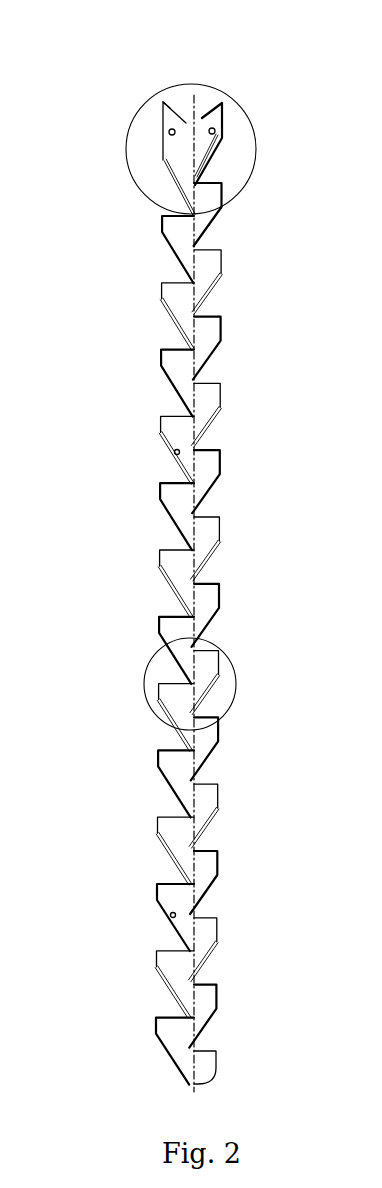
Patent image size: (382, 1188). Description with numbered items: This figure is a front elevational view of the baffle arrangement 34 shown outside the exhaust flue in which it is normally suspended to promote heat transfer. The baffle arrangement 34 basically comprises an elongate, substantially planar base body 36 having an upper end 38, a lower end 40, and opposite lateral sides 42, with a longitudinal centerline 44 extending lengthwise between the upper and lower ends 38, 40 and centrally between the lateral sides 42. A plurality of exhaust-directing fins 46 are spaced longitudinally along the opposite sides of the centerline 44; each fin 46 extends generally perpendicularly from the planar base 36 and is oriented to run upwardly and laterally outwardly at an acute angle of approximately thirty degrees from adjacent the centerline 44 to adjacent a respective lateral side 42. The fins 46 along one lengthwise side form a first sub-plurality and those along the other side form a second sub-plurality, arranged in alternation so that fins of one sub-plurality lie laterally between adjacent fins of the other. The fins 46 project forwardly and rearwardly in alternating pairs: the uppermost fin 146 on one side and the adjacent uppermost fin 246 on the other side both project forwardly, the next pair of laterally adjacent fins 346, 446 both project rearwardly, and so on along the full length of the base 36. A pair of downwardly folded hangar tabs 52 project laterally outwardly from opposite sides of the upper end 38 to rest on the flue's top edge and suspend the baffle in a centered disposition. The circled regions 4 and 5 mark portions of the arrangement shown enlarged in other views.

The detail view circle of FIG. 4 is at (161, 90).
The detail view circle of FIG. 5 is at (216, 724).
The baffle arrangement 34 is at (220, 459).
The planar base body 36 is at (180, 497).
The upper end 38 is at (184, 140).
The lower end 40 is at (200, 1087).
The lateral sides 42 is at (160, 353).
The longitudinal centerline 44 is at (217, 280).
The exhaust-directing fins 46 is at (200, 360).
The hangar tabs 52 is at (160, 104).
The uppermost fin 146 is at (213, 158).
The adjacent uppermost fin 246 is at (153, 202).
The fin 346 is at (210, 228).
The fin 446 is at (185, 269).